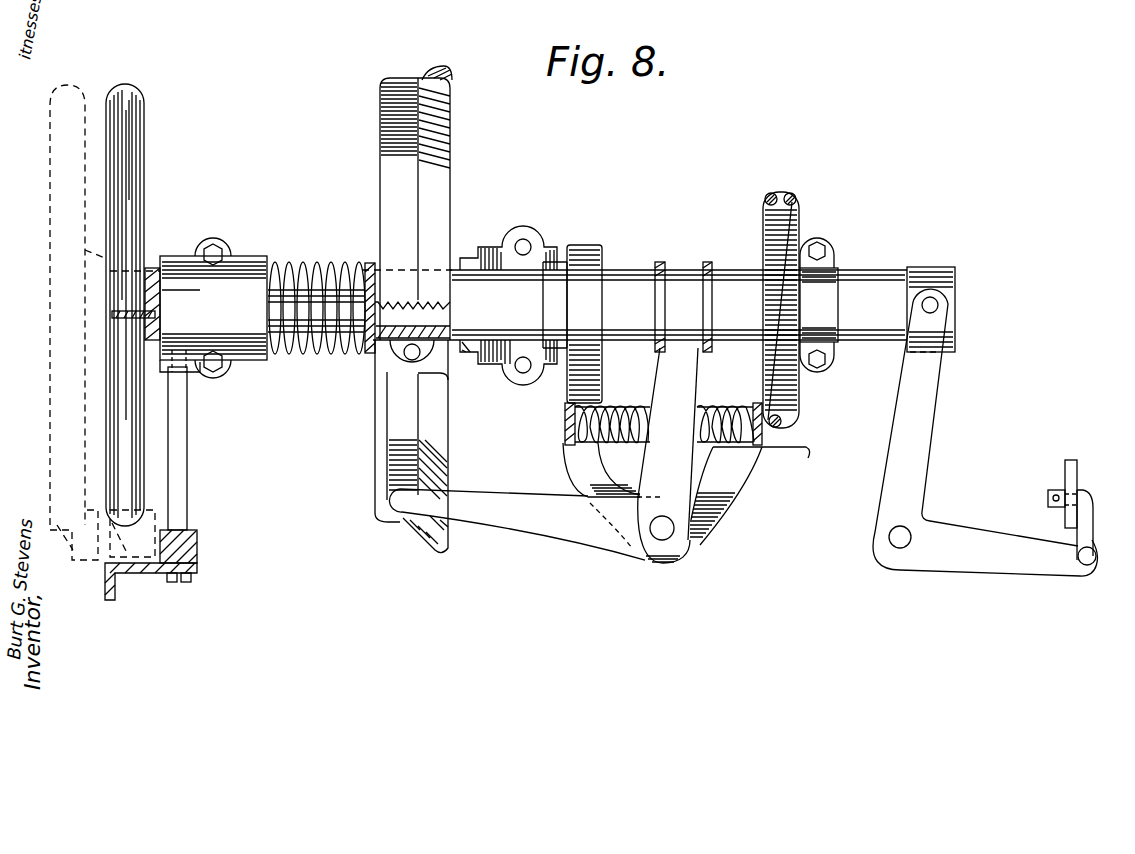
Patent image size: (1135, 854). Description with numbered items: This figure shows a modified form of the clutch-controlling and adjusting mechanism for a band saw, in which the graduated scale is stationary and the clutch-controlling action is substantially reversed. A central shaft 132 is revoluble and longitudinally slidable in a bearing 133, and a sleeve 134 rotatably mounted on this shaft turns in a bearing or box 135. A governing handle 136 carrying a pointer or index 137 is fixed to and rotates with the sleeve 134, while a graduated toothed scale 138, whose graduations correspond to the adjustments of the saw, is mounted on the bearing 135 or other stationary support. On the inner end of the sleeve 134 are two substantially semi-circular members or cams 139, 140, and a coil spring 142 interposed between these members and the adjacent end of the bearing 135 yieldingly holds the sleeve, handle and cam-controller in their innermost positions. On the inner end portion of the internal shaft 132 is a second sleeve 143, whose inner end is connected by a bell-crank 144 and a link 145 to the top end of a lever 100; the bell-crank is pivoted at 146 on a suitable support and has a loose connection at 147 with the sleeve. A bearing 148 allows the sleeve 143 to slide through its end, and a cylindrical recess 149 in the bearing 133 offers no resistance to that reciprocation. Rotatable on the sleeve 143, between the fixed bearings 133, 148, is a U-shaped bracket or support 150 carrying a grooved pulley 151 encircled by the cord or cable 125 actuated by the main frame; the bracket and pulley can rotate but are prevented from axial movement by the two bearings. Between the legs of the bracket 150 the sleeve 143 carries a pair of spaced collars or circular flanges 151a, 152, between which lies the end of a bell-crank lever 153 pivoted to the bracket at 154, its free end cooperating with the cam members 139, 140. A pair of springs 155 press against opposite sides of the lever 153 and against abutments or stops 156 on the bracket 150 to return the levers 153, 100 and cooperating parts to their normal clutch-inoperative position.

The lever 100 is at (1074, 480).
The cord or cable 125 is at (773, 193).
The central shaft 132 is at (490, 298).
The bearing 133 is at (490, 262).
The sleeve 134 is at (312, 282).
The bearing or box 135 is at (237, 292).
The governing handle 136 is at (145, 428).
The pointer or index 137 is at (115, 314).
The graduated toothed scale 138 is at (134, 573).
The semi-circular member or cam 139 is at (386, 172).
The semi-circular member or cam 140 is at (440, 82).
The coil spring 142 is at (332, 352).
The second sleeve 143 is at (866, 298).
The bell-crank 144 is at (912, 489).
The link 145 is at (1090, 532).
The pivot 146 is at (896, 548).
The loose connection 147 is at (938, 300).
The bearing 148 is at (815, 295).
The cylindrical recess 149 is at (512, 334).
The U-shaped bracket or support 150 is at (740, 484).
The grooved pulley 151 is at (792, 226).
The collar or circular flange 151a is at (660, 266).
The collar or circular flange 152 is at (708, 264).
The bell-crank lever 153 is at (583, 534).
The pivot 154 is at (667, 538).
The springs 155 is at (612, 412).
The abutments or stops 156 is at (565, 424).